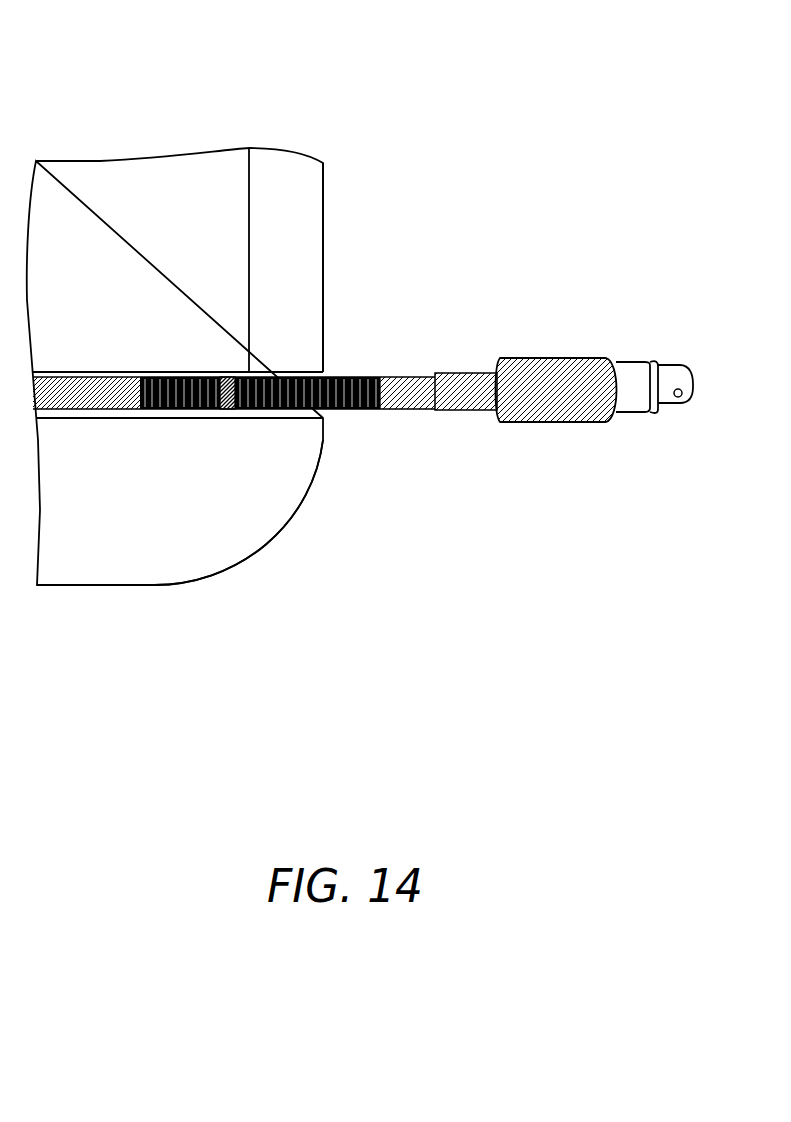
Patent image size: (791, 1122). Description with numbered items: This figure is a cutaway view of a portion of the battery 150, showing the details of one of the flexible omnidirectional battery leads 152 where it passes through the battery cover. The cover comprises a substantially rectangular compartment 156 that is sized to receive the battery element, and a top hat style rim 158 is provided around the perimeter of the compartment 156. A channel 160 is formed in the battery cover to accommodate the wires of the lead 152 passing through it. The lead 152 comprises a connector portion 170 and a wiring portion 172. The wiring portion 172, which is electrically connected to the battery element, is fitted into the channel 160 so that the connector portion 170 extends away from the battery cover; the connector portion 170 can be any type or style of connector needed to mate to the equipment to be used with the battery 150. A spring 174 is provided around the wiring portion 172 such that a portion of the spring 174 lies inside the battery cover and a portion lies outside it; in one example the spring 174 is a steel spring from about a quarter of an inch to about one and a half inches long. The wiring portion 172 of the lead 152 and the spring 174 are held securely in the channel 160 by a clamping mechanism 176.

The battery 150 is at (170, 66).
The flexible omnidirectional battery lead 152 is at (590, 330).
The compartment 156 is at (151, 254).
The top hat style rim 158 is at (324, 230).
The channel 160 is at (307, 372).
The connector portion 170 is at (590, 422).
The wiring portion 172 is at (405, 409).
The spring 174 is at (298, 419).
The clamping mechanism 176 is at (228, 376).